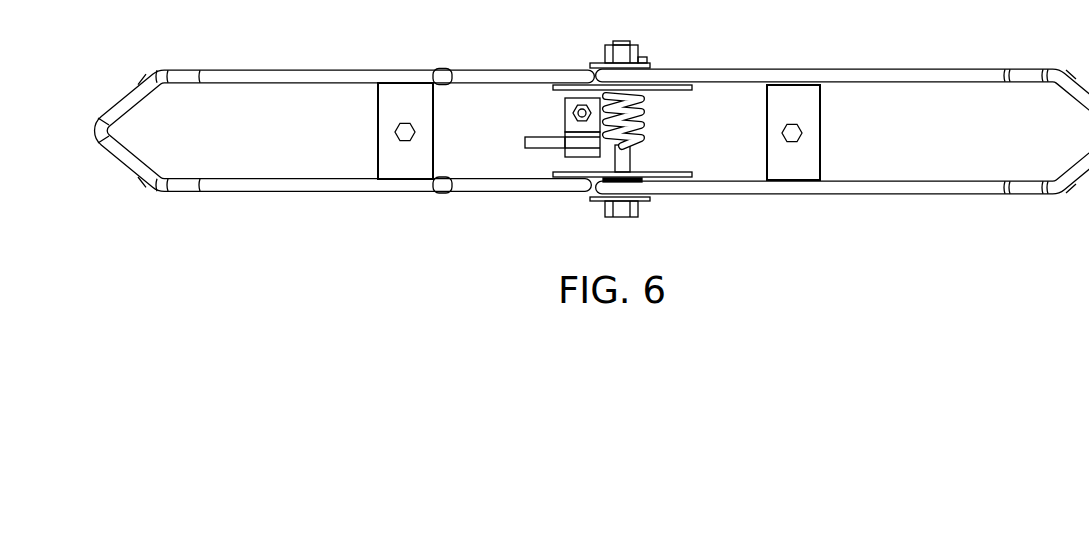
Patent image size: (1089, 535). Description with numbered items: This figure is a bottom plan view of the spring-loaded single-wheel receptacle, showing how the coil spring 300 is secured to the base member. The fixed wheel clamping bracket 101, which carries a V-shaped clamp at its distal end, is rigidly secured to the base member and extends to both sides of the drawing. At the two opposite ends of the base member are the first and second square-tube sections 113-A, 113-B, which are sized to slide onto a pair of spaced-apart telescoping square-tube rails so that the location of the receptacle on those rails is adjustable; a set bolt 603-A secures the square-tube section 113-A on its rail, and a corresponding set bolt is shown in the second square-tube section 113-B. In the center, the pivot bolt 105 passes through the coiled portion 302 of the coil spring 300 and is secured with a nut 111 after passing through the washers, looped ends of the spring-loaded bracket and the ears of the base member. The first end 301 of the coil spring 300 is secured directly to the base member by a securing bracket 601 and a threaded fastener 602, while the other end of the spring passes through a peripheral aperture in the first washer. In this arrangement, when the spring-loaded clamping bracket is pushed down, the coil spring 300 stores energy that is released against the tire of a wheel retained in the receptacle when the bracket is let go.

The fixed wheel clamping bracket 101 is at (310, 75).
The first square-tube section 113-A is at (800, 108).
The second square-tube section 113-B is at (388, 108).
The set bolt 603-A is at (395, 133).
The nut 111 is at (621, 52).
The coiled portion 302 is at (642, 60).
The pivot bolt 105 is at (621, 212).
The coil spring 300 is at (653, 135).
The first end 301 is at (540, 142).
The threaded fastener 602 is at (582, 108).
The securing bracket 601 is at (578, 150).